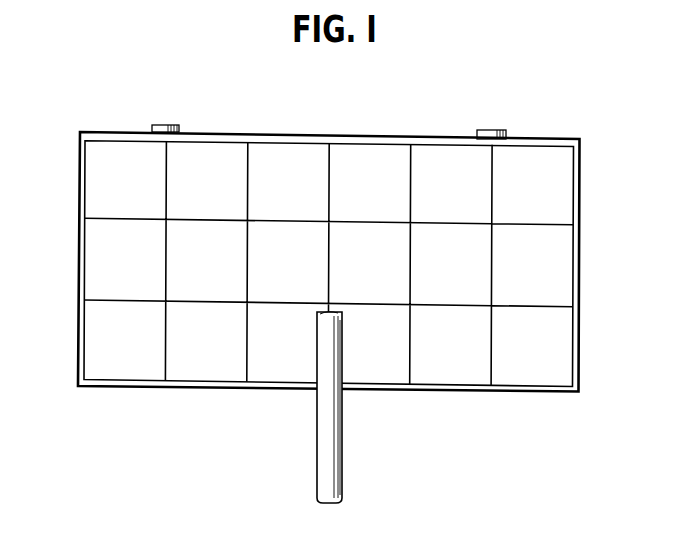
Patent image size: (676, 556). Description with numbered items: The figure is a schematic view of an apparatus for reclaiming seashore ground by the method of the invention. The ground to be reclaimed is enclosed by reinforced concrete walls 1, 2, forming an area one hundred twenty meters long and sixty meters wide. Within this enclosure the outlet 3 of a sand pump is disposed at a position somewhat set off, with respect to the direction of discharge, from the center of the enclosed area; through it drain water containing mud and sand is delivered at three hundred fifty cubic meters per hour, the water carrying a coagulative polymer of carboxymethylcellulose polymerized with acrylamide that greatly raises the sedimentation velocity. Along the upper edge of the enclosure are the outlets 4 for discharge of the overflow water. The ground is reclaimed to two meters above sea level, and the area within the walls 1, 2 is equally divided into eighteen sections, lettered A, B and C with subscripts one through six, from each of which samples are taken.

The reinforced concrete wall 1 is at (217, 387).
The reinforced concrete wall 2 is at (83, 243).
The outlet of a sand pump 3 is at (337, 312).
The outlets for discharge of the overflow water 4 is at (168, 124).